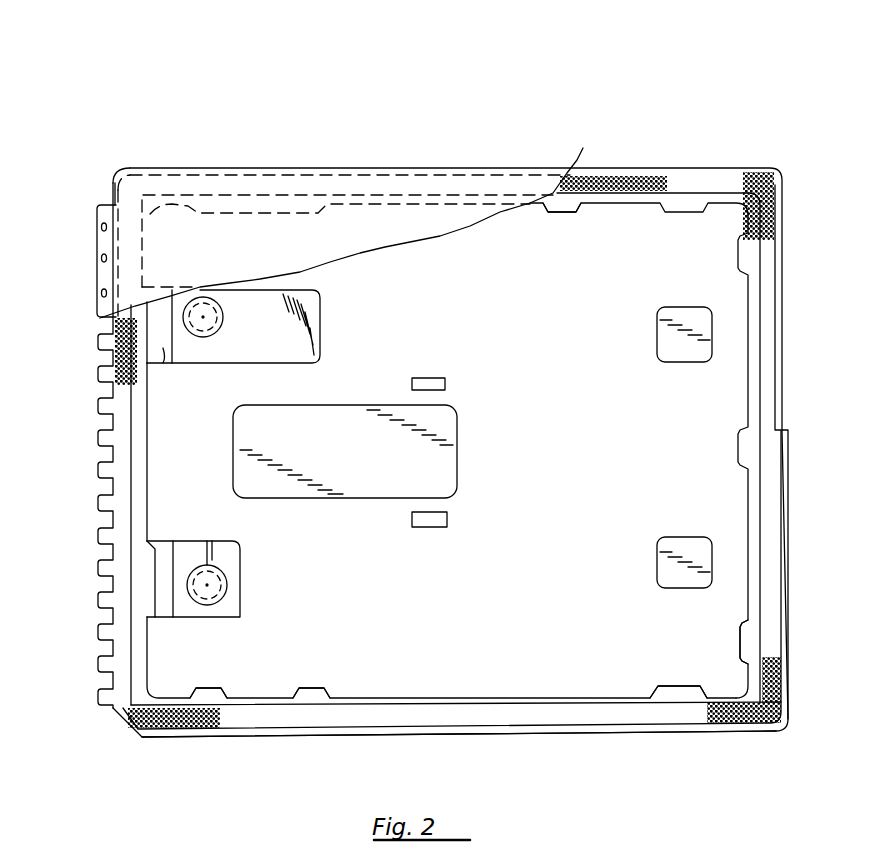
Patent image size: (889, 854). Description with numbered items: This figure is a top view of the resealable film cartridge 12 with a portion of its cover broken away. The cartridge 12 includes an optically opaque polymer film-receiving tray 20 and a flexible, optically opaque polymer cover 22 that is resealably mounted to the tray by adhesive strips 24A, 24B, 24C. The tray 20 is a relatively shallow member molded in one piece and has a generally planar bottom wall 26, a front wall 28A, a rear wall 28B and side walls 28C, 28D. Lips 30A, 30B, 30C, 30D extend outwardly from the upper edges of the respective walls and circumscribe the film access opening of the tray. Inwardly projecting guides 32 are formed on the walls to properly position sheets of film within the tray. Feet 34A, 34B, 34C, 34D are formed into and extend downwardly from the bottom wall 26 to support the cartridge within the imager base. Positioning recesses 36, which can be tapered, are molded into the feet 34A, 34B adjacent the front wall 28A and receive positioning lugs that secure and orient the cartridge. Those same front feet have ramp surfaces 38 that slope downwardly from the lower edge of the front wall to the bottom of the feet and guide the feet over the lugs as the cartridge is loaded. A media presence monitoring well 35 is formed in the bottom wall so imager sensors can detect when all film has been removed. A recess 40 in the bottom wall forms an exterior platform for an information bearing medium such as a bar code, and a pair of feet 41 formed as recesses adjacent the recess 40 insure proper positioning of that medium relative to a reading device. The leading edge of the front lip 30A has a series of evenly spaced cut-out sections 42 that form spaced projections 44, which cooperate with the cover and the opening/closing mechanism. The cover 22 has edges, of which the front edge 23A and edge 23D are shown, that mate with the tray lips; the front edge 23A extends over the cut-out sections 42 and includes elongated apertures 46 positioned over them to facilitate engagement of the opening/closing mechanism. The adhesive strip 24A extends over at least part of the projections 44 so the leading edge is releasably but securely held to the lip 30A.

The resealable cartridge 12 is at (657, 70).
The film-receiving tray 20 is at (713, 163).
The cover 22 is at (325, 258).
The front edge of cover 23A is at (97, 212).
The cover edge 23D is at (370, 167).
The adhesive strip 24A is at (123, 470).
The adhesive strip 24B is at (637, 182).
The adhesive strip 24C is at (685, 728).
The bottom wall 26 is at (593, 644).
The front wall 28A is at (148, 435).
The rear wall 28B is at (746, 395).
The side wall 28C is at (425, 697).
The side wall 28D is at (603, 210).
The front lip 30A is at (100, 582).
The lip 30B is at (788, 559).
The lip 30C is at (268, 737).
The lip 30D is at (583, 148).
The guides 32 is at (207, 216).
The foot 34A is at (318, 346).
The foot 34B is at (240, 556).
The foot 34C is at (660, 560).
The foot 34D is at (668, 332).
The media presence monitoring well 35 is at (307, 318).
The positioning recesses 36 is at (206, 322).
The ramp surfaces 38 is at (164, 352).
The recess 40 is at (360, 461).
The feet 41 is at (432, 378).
The cut-out sections 42 is at (105, 390).
The projections 44 is at (100, 405).
The elongated apertures 46 is at (100, 229).